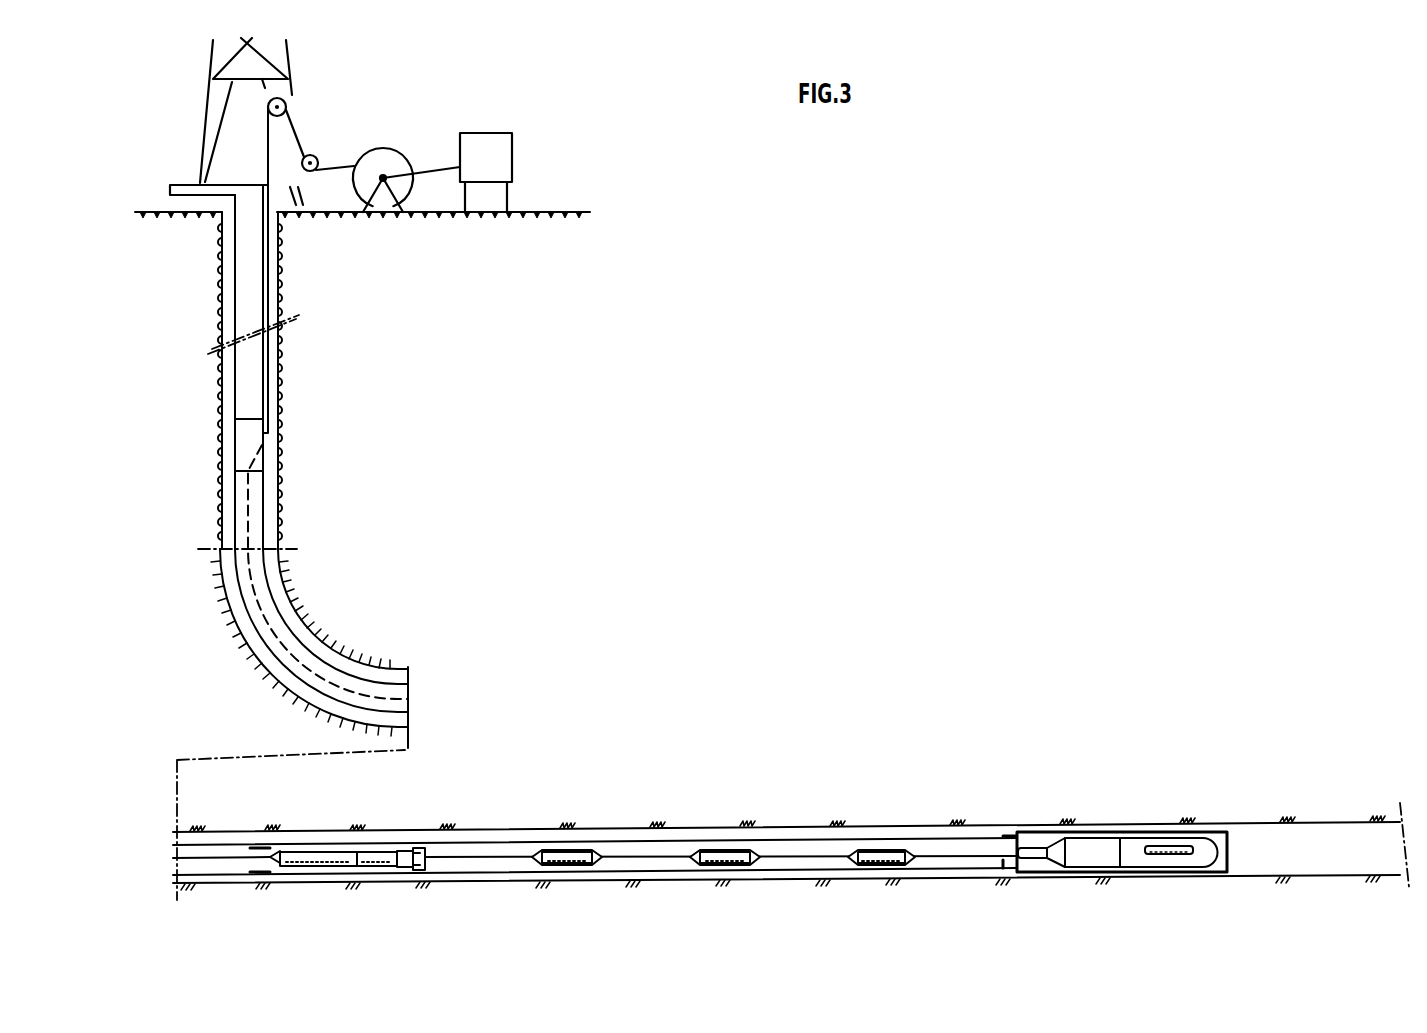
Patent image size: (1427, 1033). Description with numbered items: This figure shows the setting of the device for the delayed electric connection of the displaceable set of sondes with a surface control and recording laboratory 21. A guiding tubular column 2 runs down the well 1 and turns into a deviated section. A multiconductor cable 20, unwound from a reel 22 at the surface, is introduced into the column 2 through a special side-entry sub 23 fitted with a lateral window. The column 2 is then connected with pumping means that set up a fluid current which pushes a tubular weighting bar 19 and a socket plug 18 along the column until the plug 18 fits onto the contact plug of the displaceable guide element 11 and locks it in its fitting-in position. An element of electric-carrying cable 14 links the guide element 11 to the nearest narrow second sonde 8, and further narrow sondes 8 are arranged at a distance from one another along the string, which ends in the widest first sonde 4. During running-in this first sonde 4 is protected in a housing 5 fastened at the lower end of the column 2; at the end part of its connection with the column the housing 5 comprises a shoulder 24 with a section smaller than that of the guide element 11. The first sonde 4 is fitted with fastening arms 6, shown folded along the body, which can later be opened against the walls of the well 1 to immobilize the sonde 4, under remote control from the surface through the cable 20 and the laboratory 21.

The well 1 is at (305, 632).
The guiding tubular column 2 is at (270, 497).
The first sonde 4 is at (1100, 848).
The housing 5 is at (1048, 848).
The fastening or anchoring arms 6 is at (1163, 845).
The second sonde 8 is at (717, 850).
The guide element 11 is at (418, 855).
The electric-carrying cable element 14 is at (505, 858).
The socket plug 18 is at (390, 857).
The tubular weighting bar 19 is at (320, 857).
The multiconductor cable 20 is at (273, 270).
The surface control and recording laboratory 21 is at (472, 143).
The reel 22 is at (378, 158).
The side-entry sub 23 is at (263, 458).
The shoulder 24 is at (1012, 837).